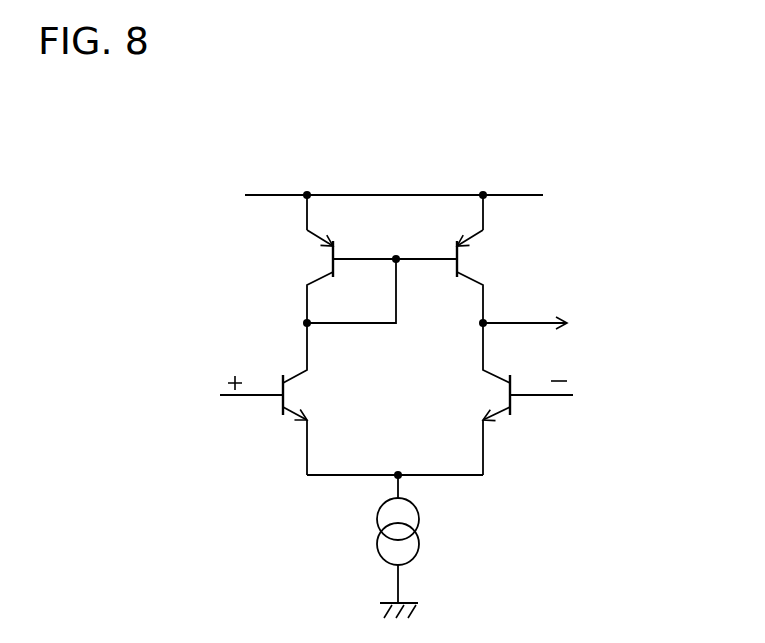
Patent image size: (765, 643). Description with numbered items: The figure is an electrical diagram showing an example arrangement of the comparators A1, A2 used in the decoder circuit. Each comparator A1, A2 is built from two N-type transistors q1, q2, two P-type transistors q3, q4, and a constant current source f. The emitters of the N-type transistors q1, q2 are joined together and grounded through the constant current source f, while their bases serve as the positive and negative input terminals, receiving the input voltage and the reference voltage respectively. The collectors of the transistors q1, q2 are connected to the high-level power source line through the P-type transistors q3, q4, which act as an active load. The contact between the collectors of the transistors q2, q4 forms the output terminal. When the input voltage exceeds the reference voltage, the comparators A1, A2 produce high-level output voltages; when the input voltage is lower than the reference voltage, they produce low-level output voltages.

The comparator A1 is at (173, 148).
The comparator A2 is at (391, 356).
The N-type transistor q1 is at (283, 384).
The N-type transistor q2 is at (510, 384).
The P-type transistor q3 is at (336, 246).
The P-type transistor q4 is at (454, 246).
The constant current source f is at (419, 541).